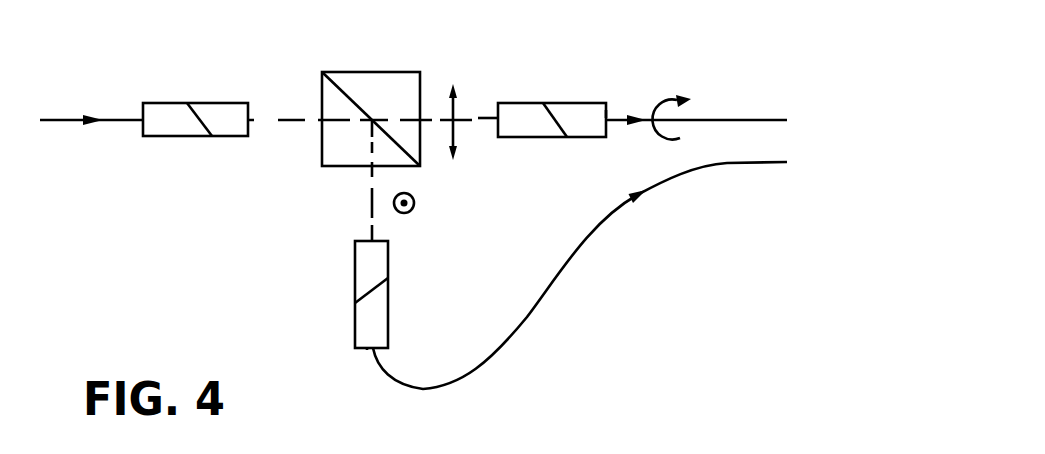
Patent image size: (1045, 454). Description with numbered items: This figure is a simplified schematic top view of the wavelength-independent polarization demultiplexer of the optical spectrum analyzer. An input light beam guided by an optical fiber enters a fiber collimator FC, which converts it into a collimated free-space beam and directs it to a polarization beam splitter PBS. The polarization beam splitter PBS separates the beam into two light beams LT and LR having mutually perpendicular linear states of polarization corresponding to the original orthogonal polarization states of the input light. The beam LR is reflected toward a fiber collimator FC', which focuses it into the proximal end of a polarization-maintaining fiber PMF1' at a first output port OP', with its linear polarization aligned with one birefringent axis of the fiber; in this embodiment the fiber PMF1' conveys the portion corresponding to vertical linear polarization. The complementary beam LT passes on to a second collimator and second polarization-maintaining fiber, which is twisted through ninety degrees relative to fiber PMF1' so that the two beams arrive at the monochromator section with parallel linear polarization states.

The fiber collimator FC is at (195, 102).
The polarization beam splitter PBS is at (371, 102).
The second light beam LT is at (480, 118).
The first light beam LR is at (372, 201).
The fiber collimator FC' is at (398, 294).
The first output port OP' is at (320, 379).
The first polarization-maintaining fiber PMF1' is at (583, 275).